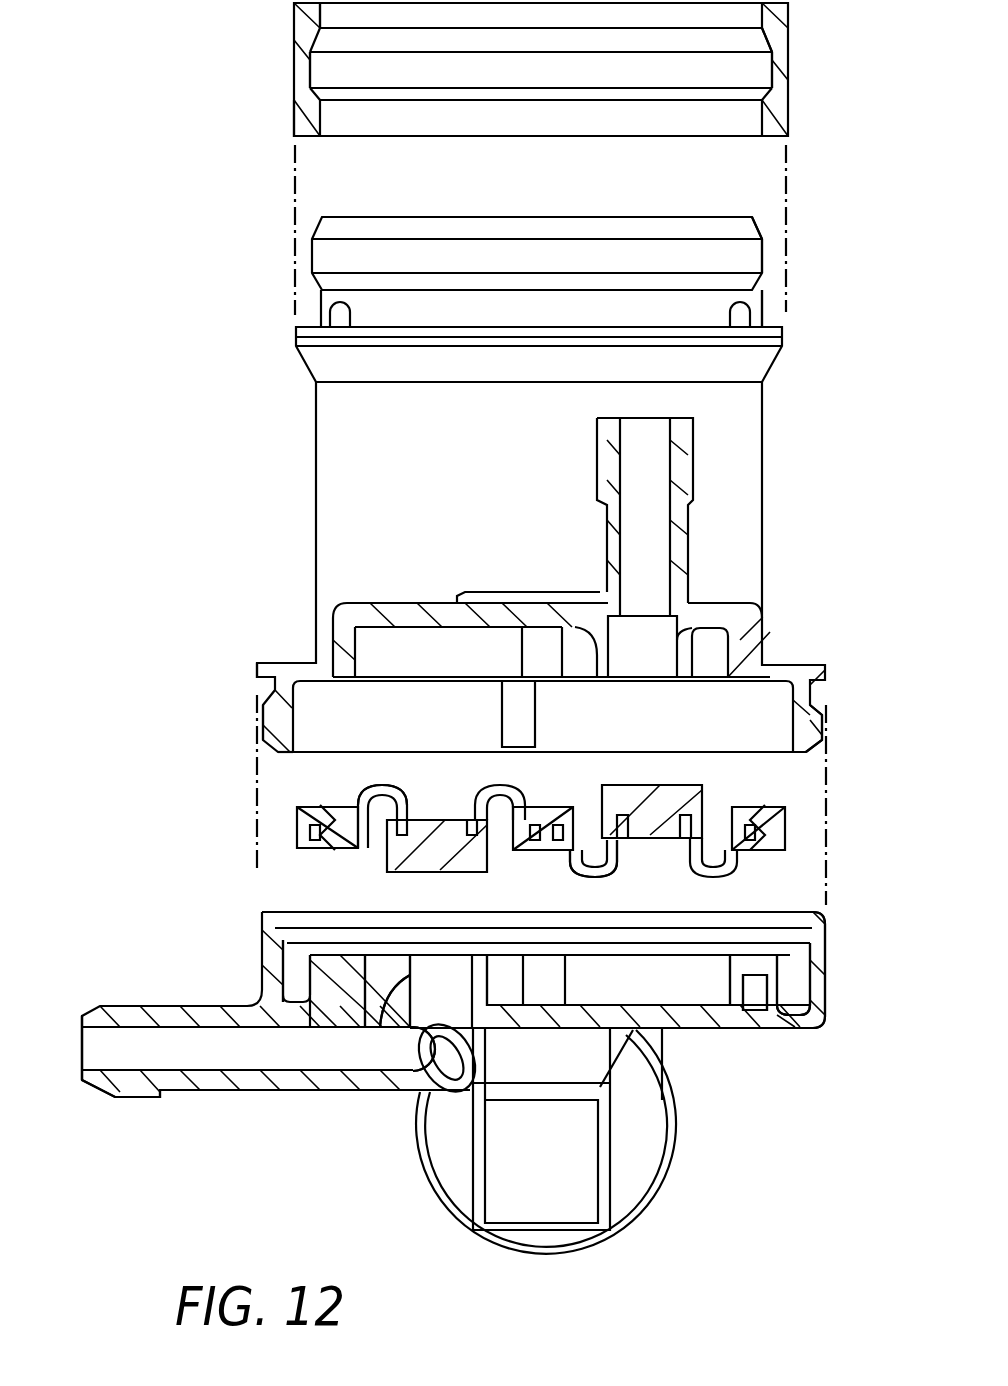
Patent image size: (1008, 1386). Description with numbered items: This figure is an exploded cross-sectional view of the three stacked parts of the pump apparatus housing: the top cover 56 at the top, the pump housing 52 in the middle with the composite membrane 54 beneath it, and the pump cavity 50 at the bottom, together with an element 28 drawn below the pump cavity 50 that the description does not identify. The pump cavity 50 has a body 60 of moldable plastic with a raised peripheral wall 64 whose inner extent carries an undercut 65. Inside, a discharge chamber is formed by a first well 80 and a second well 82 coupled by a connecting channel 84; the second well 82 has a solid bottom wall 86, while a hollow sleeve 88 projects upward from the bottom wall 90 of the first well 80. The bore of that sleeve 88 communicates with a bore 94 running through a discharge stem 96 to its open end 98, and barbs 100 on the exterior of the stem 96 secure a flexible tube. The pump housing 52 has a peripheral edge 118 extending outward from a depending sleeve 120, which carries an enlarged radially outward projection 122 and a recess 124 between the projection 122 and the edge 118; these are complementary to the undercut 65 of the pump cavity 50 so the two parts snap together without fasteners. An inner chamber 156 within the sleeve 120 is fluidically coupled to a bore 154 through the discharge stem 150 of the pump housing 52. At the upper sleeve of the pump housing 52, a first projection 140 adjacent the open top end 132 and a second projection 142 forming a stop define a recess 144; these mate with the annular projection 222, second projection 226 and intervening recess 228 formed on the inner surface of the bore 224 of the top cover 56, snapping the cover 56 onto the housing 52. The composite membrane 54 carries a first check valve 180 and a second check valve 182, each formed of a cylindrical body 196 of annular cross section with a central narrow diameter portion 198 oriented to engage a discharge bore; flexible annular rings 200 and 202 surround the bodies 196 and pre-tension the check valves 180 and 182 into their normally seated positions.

The top cover 56 is at (135, 88).
The second projection 226 is at (295, 22).
The recess 228 is at (300, 88).
The annular projection 222 is at (295, 112).
The bore 224 is at (780, 68).
The open top end 132 is at (757, 218).
The first projection 140 is at (775, 258).
The recess 144 is at (775, 318).
The second projection 142 is at (780, 340).
The pump housing 52 is at (305, 428).
The bore 154 is at (625, 455).
The discharge stem 150 is at (598, 540).
The peripheral edge 118 is at (273, 693).
The recess 124 is at (267, 693).
The sleeve 120 is at (258, 718).
The projection 122 is at (263, 730).
The inner chamber 156 is at (818, 743).
The cylindrical body 196 is at (413, 822).
The narrow diameter portion 198 is at (420, 822).
The composite membrane 54 is at (775, 798).
The first check valve 180 is at (430, 857).
The second check valve 182 is at (635, 825).
The annular ring 200 is at (580, 858).
The annular ring 202 is at (377, 797).
The pump cavity 50 is at (195, 955).
The undercut 65 is at (290, 977).
The peripheral wall 64 is at (818, 920).
The body 60 is at (828, 995).
The bore 94 is at (157, 1033).
The discharge stem 96 is at (240, 1095).
The open end 98 is at (75, 1077).
The barbs 100 is at (137, 1082).
The bottom wall 90 is at (355, 1010).
The first well 80 is at (378, 1000).
The connecting channel 84 is at (552, 988).
The second well 82 is at (733, 1032).
The bottom wall 86 is at (667, 1000).
The hollow sleeve 88 is at (518, 1030).
The tube 28 is at (645, 1212).